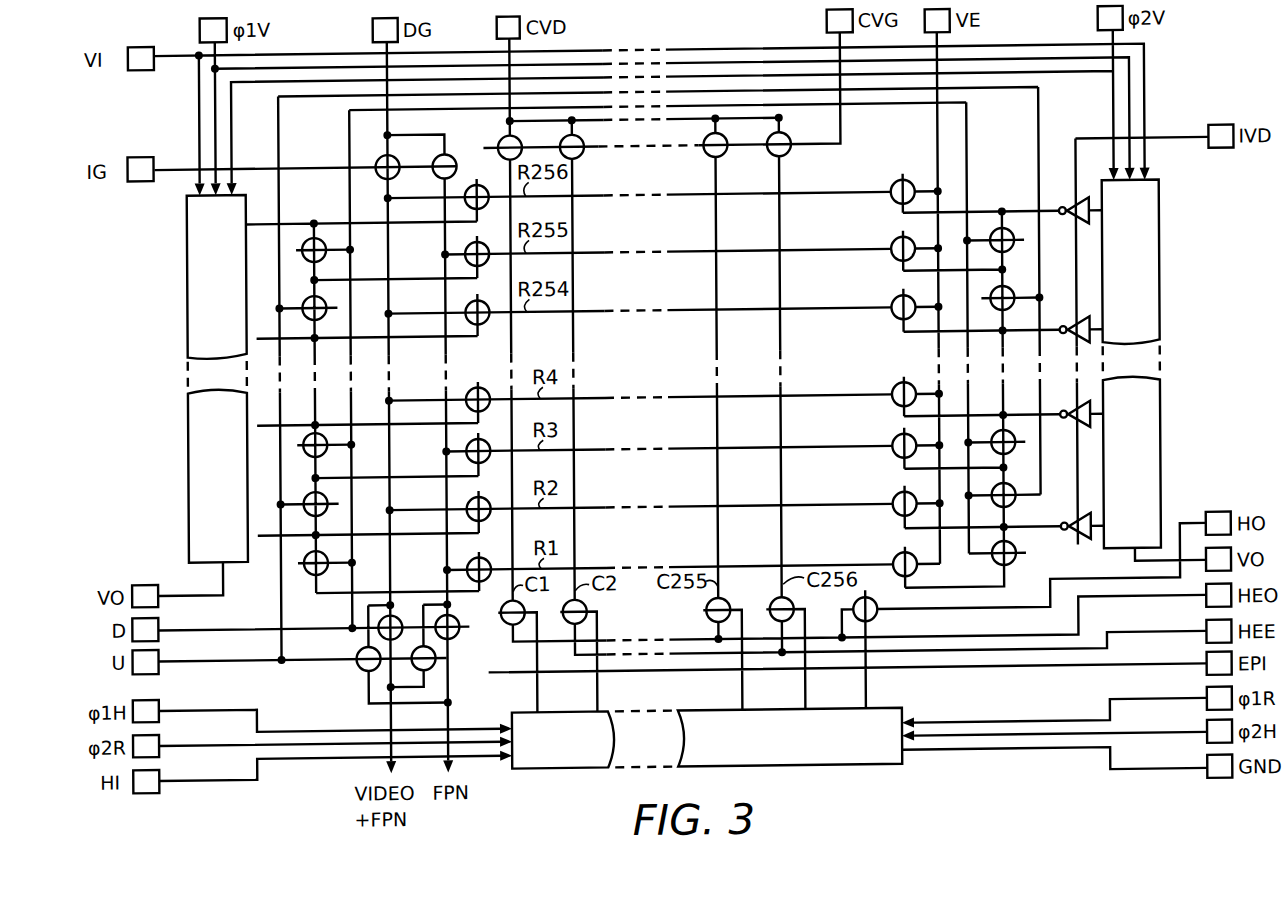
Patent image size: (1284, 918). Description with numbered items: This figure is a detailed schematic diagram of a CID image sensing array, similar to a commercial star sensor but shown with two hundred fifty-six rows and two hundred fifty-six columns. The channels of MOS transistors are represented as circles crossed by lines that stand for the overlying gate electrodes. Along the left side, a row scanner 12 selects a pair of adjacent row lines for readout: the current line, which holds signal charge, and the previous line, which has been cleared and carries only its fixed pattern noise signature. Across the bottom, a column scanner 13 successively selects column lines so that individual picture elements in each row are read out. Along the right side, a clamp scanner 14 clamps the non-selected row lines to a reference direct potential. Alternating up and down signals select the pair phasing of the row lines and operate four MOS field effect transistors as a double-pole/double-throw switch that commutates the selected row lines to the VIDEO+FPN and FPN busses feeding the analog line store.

The row scanner 12 is at (188, 288).
The column scanner 13 is at (900, 711).
The clamp scanner 14 is at (1160, 272).